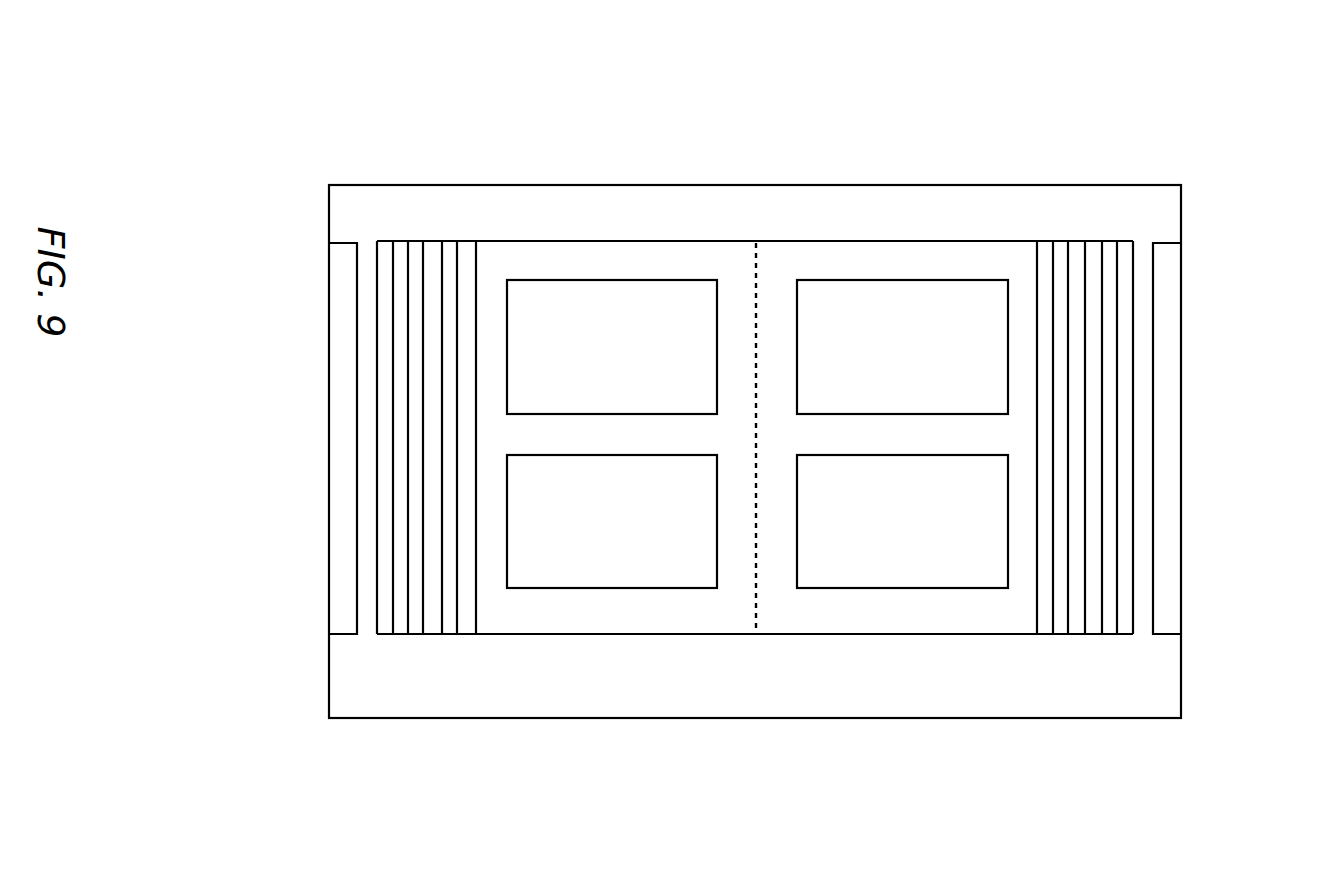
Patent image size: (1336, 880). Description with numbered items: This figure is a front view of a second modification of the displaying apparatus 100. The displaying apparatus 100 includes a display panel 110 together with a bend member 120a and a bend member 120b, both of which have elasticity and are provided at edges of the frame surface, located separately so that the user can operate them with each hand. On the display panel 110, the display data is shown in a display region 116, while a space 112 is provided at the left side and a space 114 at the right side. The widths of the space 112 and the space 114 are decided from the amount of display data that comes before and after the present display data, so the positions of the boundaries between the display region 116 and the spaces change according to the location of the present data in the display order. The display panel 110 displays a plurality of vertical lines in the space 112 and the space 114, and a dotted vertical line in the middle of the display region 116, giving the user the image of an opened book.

The displaying apparatus 100 is at (1152, 48).
The display panel 110 is at (329, 150).
The space 112 is at (476, 238).
The space 114 is at (1133, 238).
The display region 116 is at (478, 238).
The bend member 120a is at (1178, 243).
The bend member 120b is at (330, 243).